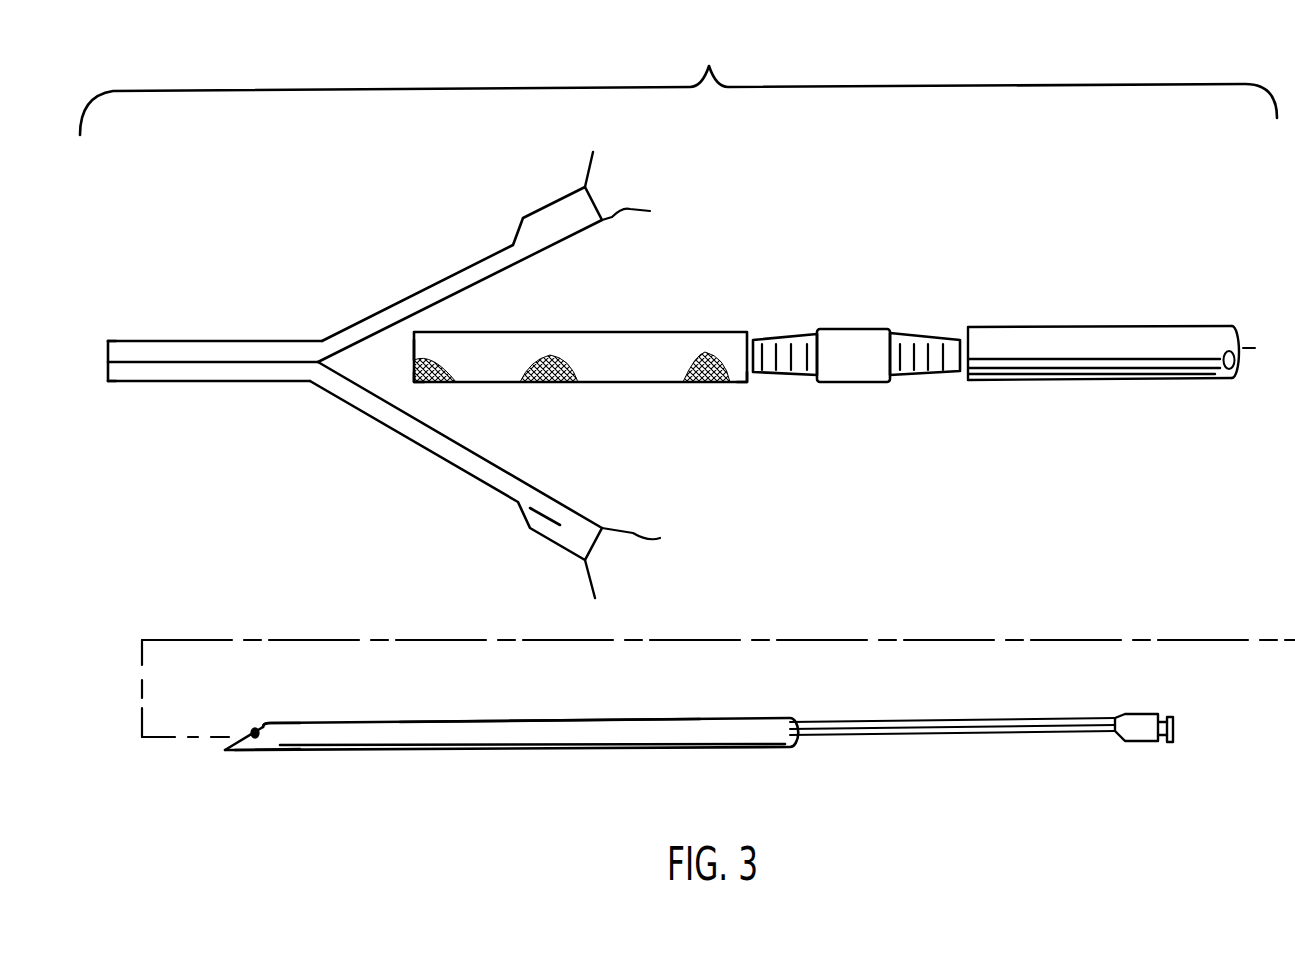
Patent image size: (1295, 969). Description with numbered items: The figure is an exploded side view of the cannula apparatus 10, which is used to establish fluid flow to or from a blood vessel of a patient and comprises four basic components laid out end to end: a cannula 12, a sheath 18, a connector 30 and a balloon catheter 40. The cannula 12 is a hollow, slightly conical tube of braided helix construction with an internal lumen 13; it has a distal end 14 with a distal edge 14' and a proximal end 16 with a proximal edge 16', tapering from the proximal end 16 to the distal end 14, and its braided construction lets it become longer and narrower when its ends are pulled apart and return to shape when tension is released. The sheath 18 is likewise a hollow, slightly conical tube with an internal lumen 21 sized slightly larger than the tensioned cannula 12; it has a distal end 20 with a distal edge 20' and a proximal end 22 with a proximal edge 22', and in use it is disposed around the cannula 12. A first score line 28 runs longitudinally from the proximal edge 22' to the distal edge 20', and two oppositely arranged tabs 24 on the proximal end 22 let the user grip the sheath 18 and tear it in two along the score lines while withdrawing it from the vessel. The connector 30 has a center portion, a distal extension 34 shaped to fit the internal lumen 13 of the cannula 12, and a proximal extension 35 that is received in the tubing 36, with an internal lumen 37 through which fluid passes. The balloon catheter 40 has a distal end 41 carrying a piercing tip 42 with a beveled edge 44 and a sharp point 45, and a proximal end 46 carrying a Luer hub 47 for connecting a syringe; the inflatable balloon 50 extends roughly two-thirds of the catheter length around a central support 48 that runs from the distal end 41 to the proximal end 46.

The cannula apparatus 10 is at (678, 82).
The cannula 12 is at (585, 383).
The internal lumen 13 is at (403, 355).
The distal end 14 is at (460, 401).
The distal edge 14' is at (375, 418).
The proximal end 16 is at (625, 398).
The proximal edge 16' is at (755, 408).
The sheath 18 is at (242, 380).
The distal end 20 is at (126, 390).
The distal edge 20' is at (80, 400).
The internal lumen 21 is at (106, 350).
The proximal end 22 is at (470, 373).
The proximal edge 22' is at (654, 374).
The tab 24 is at (588, 173).
The first score line 28 is at (177, 361).
The connector 30 is at (870, 371).
The distal extension 34 is at (798, 373).
The proximal extension 35 is at (937, 371).
The tubing 36 is at (1080, 368).
The internal lumen 37 is at (755, 338).
The balloon catheter 40 is at (538, 755).
The distal end 41 is at (253, 730).
The piercing tip 42 is at (251, 751).
The beveled edge 44 is at (241, 733).
The sharp point 45 is at (225, 751).
The proximal end 46 is at (1117, 738).
The Luer hub 47 is at (1168, 717).
The central support 48 is at (900, 733).
The inflatable balloon 50 is at (538, 728).